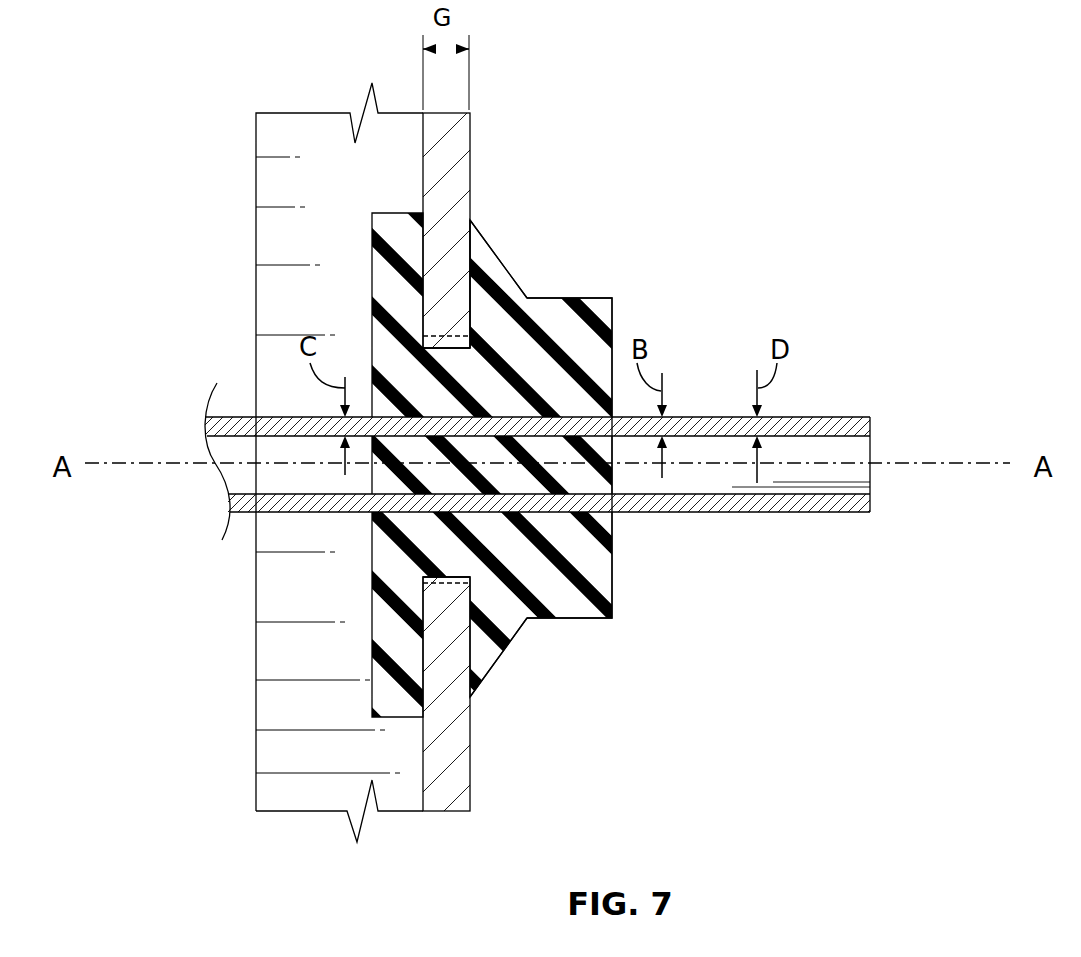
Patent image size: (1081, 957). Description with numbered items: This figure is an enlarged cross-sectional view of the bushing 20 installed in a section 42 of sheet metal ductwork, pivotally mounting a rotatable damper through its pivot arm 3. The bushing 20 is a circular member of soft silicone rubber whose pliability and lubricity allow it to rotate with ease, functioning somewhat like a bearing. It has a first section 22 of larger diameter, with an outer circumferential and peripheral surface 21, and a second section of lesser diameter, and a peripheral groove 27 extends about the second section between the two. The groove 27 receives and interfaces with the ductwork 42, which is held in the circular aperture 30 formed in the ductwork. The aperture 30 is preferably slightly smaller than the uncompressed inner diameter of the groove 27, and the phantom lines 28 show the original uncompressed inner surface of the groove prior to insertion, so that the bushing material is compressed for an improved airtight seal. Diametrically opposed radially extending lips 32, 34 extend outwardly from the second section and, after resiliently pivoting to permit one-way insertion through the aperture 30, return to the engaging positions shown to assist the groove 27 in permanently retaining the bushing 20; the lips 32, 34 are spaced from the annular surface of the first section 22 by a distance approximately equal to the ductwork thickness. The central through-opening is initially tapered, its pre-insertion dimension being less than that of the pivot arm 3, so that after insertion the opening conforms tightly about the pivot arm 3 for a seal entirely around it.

The pivot arm 3 is at (773, 512).
The bushing 20 is at (598, 632).
The outer circumferential and peripheral surface 21 is at (716, 264).
The first section 22 is at (372, 220).
The peripheral groove 27 is at (468, 297).
The initial inner diameter 28 is at (440, 337).
The circular aperture 30 is at (448, 352).
The lip 32 is at (520, 288).
The lip 34 is at (500, 648).
The section of sheet metal ductwork 42 is at (462, 150).